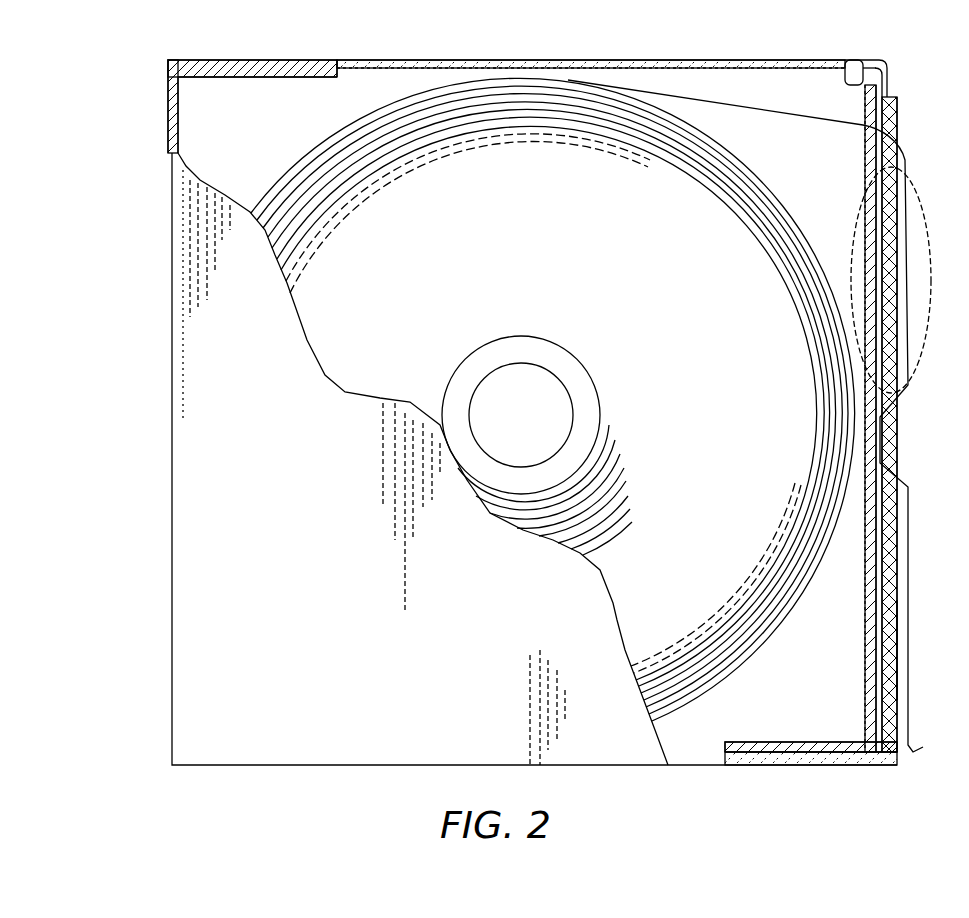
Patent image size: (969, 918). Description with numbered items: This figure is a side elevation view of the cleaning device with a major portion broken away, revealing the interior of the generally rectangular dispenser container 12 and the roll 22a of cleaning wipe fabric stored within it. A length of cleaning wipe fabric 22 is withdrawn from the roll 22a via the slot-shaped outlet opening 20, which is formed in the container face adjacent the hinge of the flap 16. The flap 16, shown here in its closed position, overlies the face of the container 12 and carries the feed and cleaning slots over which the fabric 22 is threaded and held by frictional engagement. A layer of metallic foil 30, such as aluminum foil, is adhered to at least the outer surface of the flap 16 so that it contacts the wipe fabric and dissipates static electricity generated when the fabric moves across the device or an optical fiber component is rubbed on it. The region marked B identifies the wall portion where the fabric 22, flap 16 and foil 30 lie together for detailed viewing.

The dispenser container 12 is at (330, 765).
The flap 16 is at (890, 582).
The outlet opening 20 is at (849, 60).
The cleaning wipe fabric 22 is at (798, 120).
The roll of cleaning fabric 22a is at (668, 623).
The metallic foil 30 is at (900, 647).
The detail region B is at (927, 210).